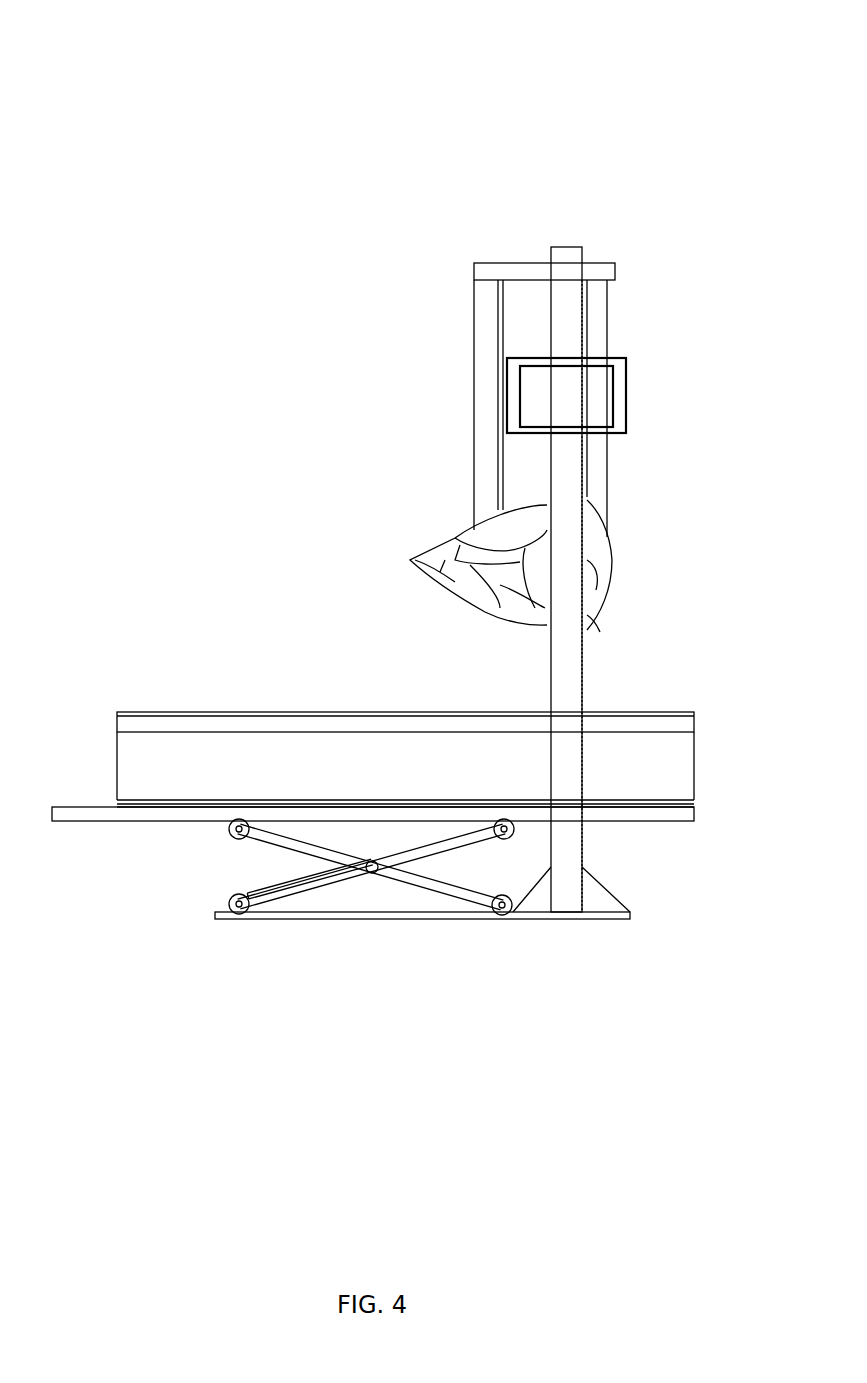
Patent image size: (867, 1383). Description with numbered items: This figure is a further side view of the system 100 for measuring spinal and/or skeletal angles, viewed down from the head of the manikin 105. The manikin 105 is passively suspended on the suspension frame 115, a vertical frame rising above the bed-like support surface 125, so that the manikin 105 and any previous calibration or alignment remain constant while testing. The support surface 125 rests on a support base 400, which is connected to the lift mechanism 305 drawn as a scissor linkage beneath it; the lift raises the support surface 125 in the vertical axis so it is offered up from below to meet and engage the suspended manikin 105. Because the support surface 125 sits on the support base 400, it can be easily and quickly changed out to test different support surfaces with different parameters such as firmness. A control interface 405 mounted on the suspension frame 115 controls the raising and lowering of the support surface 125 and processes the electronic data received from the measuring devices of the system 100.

The system 100 is at (603, 160).
The suspension frame 115 is at (556, 247).
The control interface 405 is at (627, 375).
The manikin 105 is at (612, 535).
The support surface 125 is at (610, 712).
The support base 400 is at (610, 820).
The scissor lift 305 is at (340, 883).